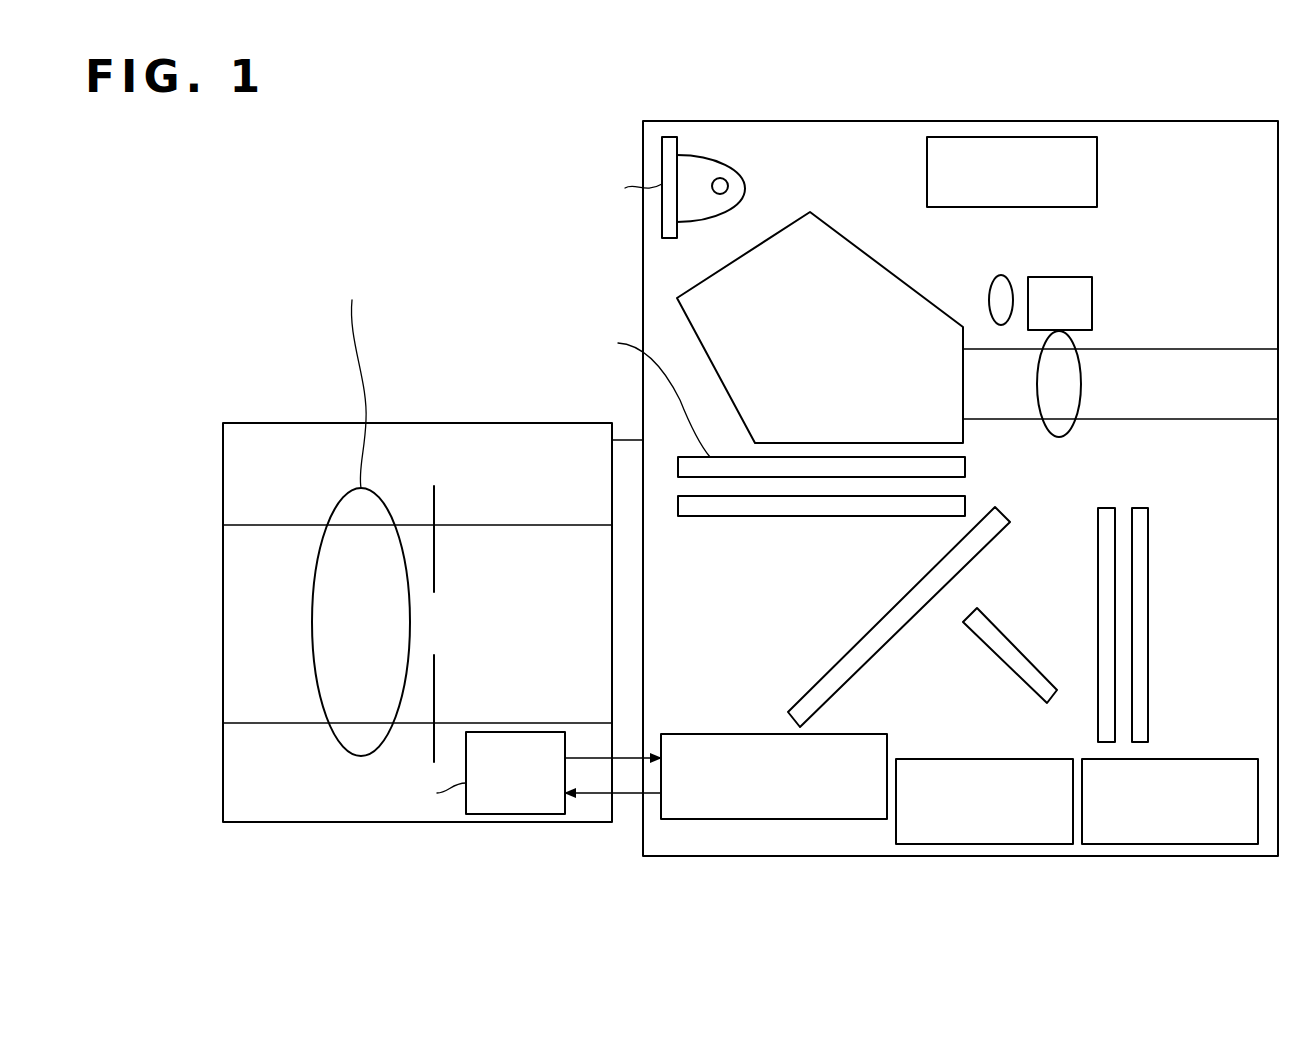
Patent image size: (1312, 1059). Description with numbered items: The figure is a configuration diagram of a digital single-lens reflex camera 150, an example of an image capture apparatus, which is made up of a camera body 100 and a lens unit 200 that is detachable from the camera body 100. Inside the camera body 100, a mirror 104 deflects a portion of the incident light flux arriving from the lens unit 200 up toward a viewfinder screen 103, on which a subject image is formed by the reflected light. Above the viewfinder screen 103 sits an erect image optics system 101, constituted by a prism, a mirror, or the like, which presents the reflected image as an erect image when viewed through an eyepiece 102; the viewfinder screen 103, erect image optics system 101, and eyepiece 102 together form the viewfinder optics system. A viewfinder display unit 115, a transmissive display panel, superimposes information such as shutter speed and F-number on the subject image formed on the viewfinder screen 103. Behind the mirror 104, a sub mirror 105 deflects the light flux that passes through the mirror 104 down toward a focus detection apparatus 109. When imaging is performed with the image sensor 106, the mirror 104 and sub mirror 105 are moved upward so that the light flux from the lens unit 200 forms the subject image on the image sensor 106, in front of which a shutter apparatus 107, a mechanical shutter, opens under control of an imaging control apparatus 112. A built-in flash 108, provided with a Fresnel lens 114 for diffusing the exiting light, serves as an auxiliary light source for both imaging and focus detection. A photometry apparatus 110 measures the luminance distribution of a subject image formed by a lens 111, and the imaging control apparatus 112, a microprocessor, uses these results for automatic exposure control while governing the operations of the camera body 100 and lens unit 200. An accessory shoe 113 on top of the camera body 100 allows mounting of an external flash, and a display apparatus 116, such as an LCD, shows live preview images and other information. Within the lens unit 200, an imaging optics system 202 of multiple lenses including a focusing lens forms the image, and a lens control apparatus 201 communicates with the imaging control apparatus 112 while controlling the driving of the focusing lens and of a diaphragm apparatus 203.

The camera body 100 is at (1212, 121).
The erect image optics system 101 is at (707, 272).
The eyepiece 102 is at (1083, 380).
The viewfinder screen 103 is at (715, 516).
The mirror 104 is at (862, 660).
The sub mirror 105 is at (1028, 685).
The image sensor 106 is at (1150, 551).
The shutter apparatus 107 is at (1098, 535).
The built-in flash 108 is at (712, 152).
The focus detection apparatus 109 is at (938, 759).
The photometry apparatus 110 is at (1093, 292).
The lens 111 is at (1001, 275).
The imaging control apparatus 112 is at (675, 733).
The accessory shoe 113 is at (1027, 137).
The Fresnel lens 114 is at (678, 233).
The viewfinder display unit 115 is at (960, 466).
The display apparatus 116 is at (1222, 759).
The camera 150 is at (393, 152).
The lens unit 200 is at (417, 622).
The lens control apparatus 201 is at (469, 775).
The imaging optics system 202 is at (357, 512).
The diaphragm apparatus 203 is at (434, 510).